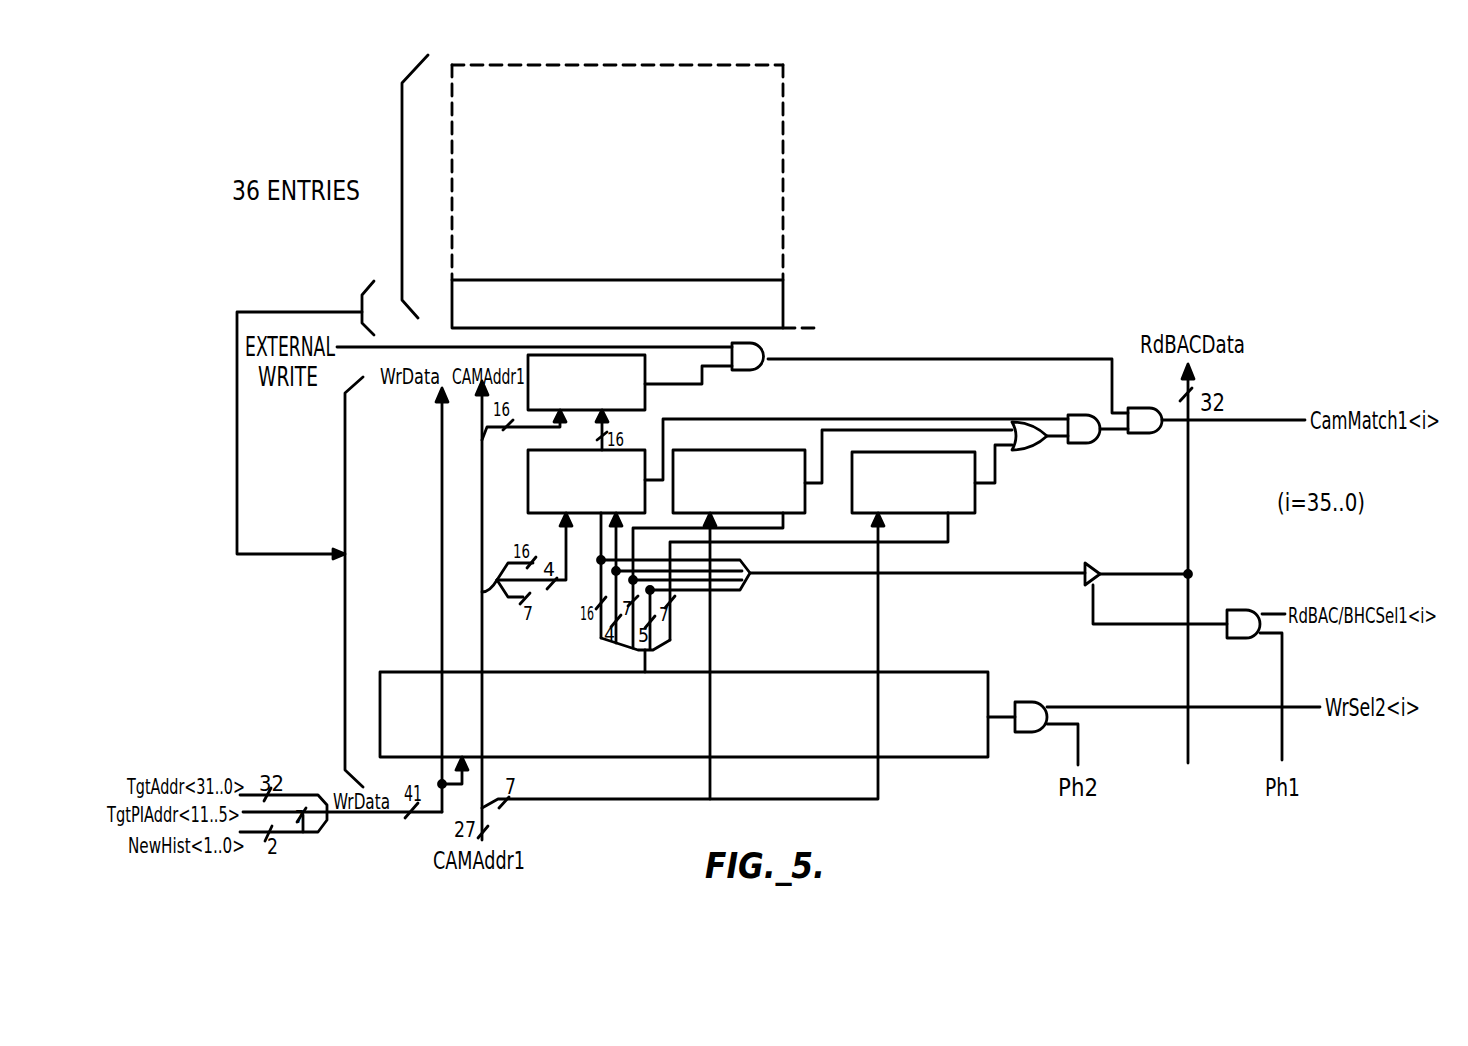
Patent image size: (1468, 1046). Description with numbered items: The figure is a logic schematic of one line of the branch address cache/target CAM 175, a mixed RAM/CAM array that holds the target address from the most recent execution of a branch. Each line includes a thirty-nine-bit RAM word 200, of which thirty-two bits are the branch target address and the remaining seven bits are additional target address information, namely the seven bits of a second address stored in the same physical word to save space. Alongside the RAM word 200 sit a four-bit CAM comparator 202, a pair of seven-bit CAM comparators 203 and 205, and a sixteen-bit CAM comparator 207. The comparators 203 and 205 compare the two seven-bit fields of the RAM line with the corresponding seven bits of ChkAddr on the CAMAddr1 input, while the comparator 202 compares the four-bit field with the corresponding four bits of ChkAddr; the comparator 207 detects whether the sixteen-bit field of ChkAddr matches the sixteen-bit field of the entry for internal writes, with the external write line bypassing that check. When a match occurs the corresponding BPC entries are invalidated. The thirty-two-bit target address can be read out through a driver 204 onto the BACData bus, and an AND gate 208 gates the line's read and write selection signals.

The branch address cache/target CAM 175 is at (785, 80).
The 16-bit CAM comparator 207 is at (647, 397).
The 4-bit CAM comparator 202 is at (528, 481).
The 7-bit CAM comparator 203 is at (706, 452).
The 7-bit CAM comparator 205 is at (977, 498).
The driver 204 is at (1090, 563).
The AND gate 208 is at (1233, 608).
The 39-bit RAM word 200 is at (957, 672).